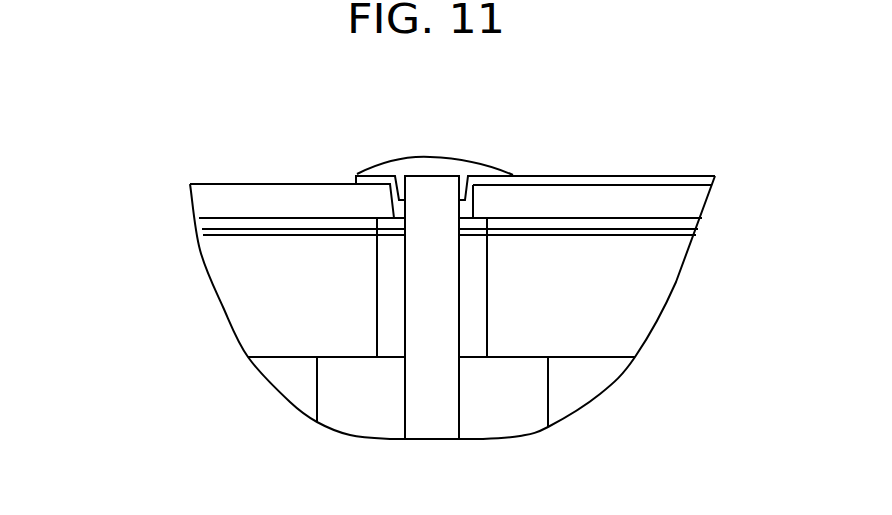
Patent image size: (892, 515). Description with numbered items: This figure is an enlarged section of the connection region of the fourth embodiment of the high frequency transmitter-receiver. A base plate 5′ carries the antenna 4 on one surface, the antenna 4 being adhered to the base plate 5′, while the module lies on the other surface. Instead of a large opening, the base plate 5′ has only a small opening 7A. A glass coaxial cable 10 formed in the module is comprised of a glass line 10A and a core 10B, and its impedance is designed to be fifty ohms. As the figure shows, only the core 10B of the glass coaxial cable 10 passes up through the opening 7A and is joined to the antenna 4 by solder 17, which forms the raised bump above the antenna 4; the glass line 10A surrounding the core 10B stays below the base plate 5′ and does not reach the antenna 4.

The antenna 4 is at (668, 203).
The base plate 5′ is at (240, 266).
The opening 7A is at (475, 265).
The glass coaxial cable 10 is at (254, 307).
The glass line 10A is at (395, 300).
The core 10B is at (427, 333).
The solder 17 is at (402, 170).